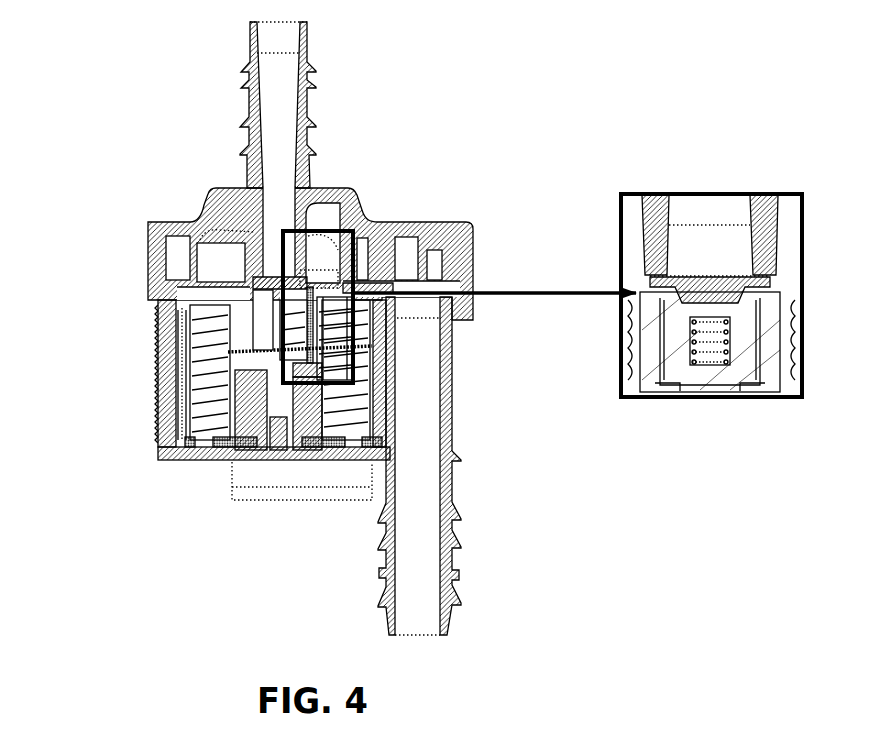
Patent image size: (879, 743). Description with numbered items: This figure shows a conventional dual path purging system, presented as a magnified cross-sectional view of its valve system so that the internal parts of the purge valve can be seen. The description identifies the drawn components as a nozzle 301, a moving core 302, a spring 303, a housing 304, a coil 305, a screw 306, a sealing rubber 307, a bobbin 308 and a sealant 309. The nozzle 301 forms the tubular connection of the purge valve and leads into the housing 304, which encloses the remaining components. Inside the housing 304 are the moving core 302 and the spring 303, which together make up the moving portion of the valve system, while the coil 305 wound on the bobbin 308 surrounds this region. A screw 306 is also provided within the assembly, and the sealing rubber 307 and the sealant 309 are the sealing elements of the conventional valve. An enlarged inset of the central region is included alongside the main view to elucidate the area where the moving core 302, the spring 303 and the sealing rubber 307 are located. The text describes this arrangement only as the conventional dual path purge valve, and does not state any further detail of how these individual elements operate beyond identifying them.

The nozzle 301 is at (325, 190).
The moving core 302 is at (340, 310).
The spring 303 is at (310, 333).
The housing 304 is at (422, 383).
The coil 305 is at (385, 395).
The screw 306 is at (313, 405).
The sealing rubber 307 is at (317, 282).
The bobbin 308 is at (240, 318).
The sealant 309 is at (307, 455).